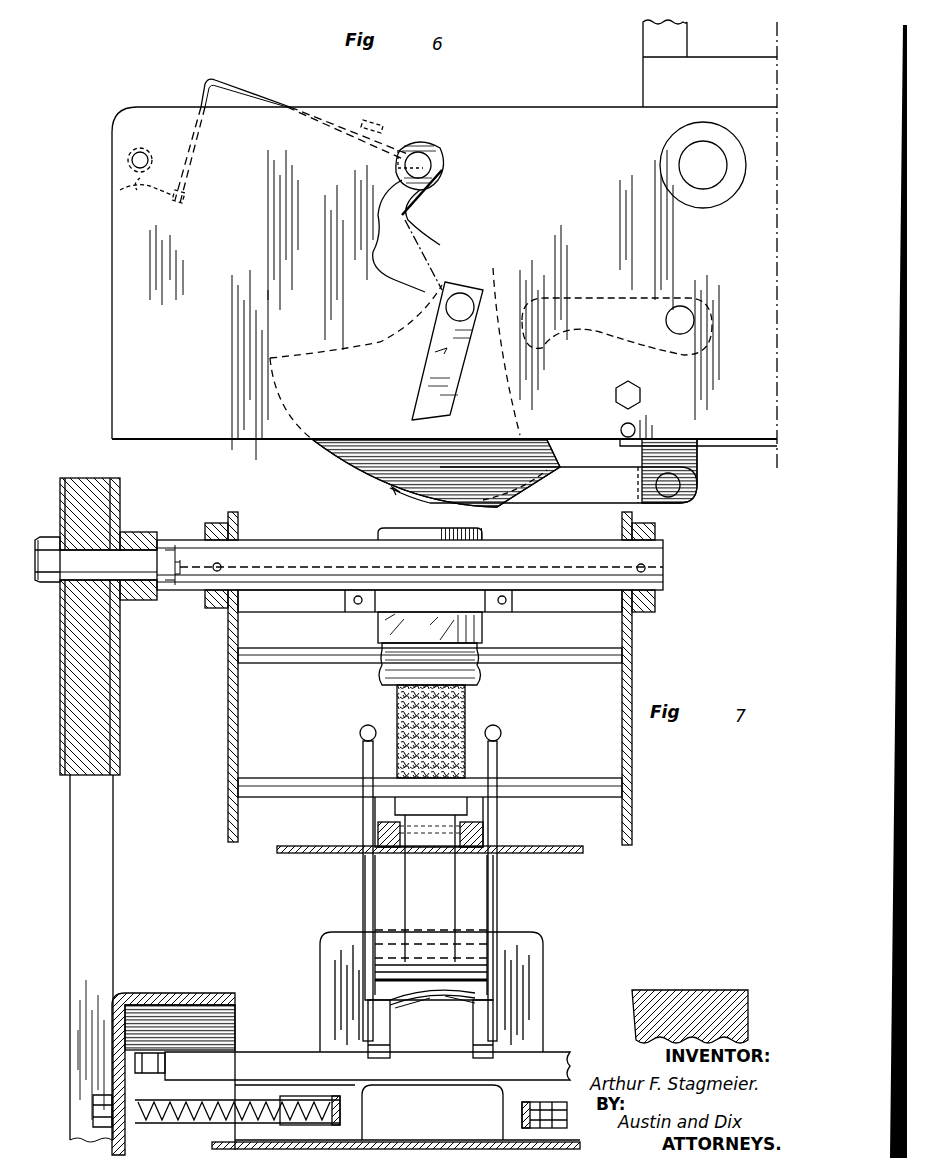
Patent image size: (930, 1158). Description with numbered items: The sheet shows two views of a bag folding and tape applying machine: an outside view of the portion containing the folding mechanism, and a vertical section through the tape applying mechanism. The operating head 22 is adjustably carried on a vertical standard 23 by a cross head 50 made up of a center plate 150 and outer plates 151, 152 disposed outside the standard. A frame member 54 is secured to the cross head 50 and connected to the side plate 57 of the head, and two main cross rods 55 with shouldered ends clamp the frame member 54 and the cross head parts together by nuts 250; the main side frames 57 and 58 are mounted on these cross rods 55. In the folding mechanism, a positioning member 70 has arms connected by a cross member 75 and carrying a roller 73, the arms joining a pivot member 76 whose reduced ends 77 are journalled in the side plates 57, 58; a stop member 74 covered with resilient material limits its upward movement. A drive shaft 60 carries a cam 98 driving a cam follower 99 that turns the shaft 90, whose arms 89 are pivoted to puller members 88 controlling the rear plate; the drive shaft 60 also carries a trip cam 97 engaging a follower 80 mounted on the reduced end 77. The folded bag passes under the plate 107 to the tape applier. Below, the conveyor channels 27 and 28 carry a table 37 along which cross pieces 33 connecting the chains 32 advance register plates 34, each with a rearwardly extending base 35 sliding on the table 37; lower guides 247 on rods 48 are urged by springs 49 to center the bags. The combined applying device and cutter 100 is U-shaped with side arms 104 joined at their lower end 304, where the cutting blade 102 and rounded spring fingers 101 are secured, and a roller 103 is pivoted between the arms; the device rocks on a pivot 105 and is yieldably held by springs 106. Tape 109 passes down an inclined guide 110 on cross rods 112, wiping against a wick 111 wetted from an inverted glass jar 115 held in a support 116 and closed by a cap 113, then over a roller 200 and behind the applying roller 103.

In FIG. 6, the operating head 22 is at (104, 368).
In FIG. 6, the vertical standard 23 is at (652, 36).
In FIG. 7, the vertical standard 23 is at (114, 917).
In FIG. 7, the channel 27 is at (175, 993).
In FIG. 6, the channel 28 is at (537, 128).
In FIG. 7, the channel 28 is at (688, 990).
In FIG. 7, the chains 32 is at (150, 1053).
In FIG. 7, the cross pieces 33 is at (286, 1060).
In FIG. 7, the plate 34 is at (546, 960).
In FIG. 7, the rearwardly extending base 35 is at (500, 1140).
In FIG. 7, the table 37 is at (428, 1143).
In FIG. 7, the rods 48 is at (242, 1105).
In FIG. 7, the springs 49 is at (196, 1124).
In FIG. 6, the cross head 50 is at (652, 80).
In FIG. 7, the frame member 54 is at (140, 605).
In FIG. 6, the main cross rods 55 is at (680, 163).
In FIG. 7, the main cross rods 55 is at (290, 545).
In FIG. 7, the side plate 57 is at (232, 694).
In FIG. 7, the side plate 58 is at (624, 703).
In FIG. 6, the drive shaft 60 is at (455, 305).
In FIG. 6, the positioning member 70 is at (252, 95).
In FIG. 6, the roller 73 is at (120, 190).
In FIG. 6, the stop member 74 is at (132, 160).
In FIG. 6, the cross member 75 is at (376, 120).
In FIG. 6, the pivot member 76 is at (395, 162).
In FIG. 6, the reduced ends 77 is at (432, 170).
In FIG. 6, the follower 80 is at (422, 206).
In FIG. 6, the puller members 88 is at (577, 493).
In FIG. 6, the arms 89 is at (690, 467).
In FIG. 6, the shaft 90 is at (692, 314).
In FIG. 6, the trip cam 97 is at (430, 222).
In FIG. 6, the cam 98 is at (340, 462).
In FIG. 6, the cam follower 99 is at (608, 296).
In FIG. 7, the combined applying device and cutter 100 is at (356, 900).
In FIG. 7, the rounded spring fingers 101 is at (376, 1022).
In FIG. 7, the cutting blade 102 is at (434, 1004).
In FIG. 7, the roller 103 is at (470, 930).
In FIG. 7, the side arms 104 is at (364, 762).
In FIG. 7, the pivot 105 is at (572, 786).
In FIG. 7, the springs 106 is at (360, 733).
In FIG. 6, the plate 107 is at (735, 447).
In FIG. 7, the plate 107 is at (568, 846).
In FIG. 7, the tape 109 is at (452, 880).
In FIG. 7, the inclined guide 110 is at (468, 716).
In FIG. 7, the wick 111 is at (402, 705).
In FIG. 7, the cross rods 112 is at (500, 660).
In FIG. 7, the cap 113 is at (480, 682).
In FIG. 7, the inverted glass jar 115 is at (478, 622).
In FIG. 7, the support 116 is at (312, 612).
In FIG. 7, the center plate 150 is at (97, 482).
In FIG. 7, the outer plate 151 is at (62, 482).
In FIG. 7, the outer plate 152 is at (122, 499).
In FIG. 7, the roller 200 is at (462, 826).
In FIG. 7, the lower guides 247 is at (320, 1103).
In FIG. 7, the nuts 250 is at (50, 592).
In FIG. 7, the end 304 is at (380, 986).